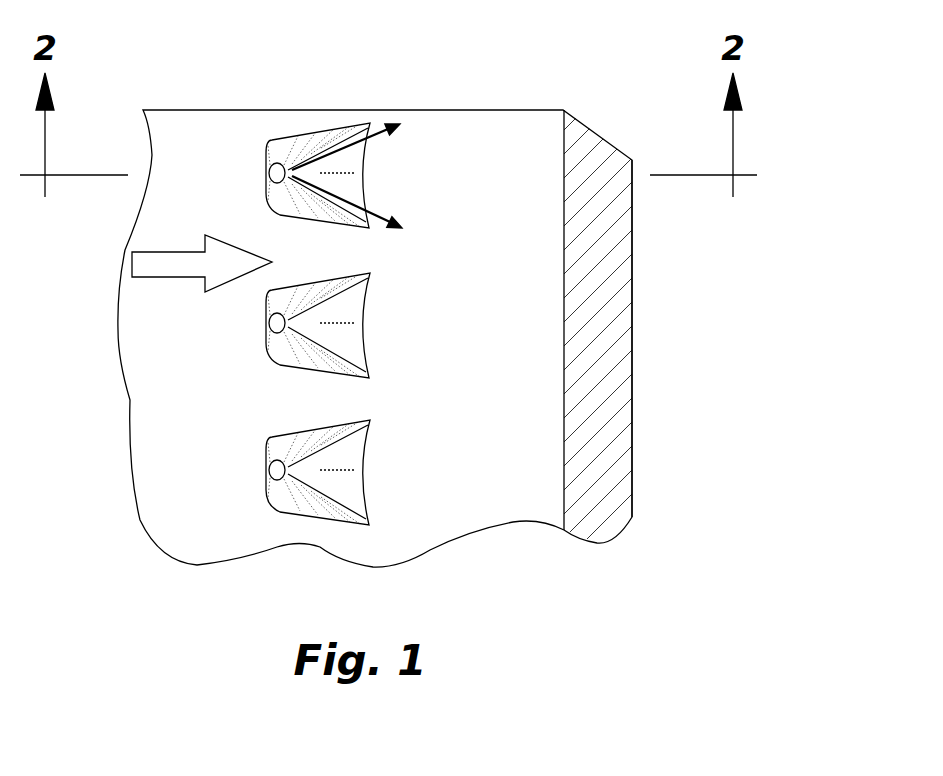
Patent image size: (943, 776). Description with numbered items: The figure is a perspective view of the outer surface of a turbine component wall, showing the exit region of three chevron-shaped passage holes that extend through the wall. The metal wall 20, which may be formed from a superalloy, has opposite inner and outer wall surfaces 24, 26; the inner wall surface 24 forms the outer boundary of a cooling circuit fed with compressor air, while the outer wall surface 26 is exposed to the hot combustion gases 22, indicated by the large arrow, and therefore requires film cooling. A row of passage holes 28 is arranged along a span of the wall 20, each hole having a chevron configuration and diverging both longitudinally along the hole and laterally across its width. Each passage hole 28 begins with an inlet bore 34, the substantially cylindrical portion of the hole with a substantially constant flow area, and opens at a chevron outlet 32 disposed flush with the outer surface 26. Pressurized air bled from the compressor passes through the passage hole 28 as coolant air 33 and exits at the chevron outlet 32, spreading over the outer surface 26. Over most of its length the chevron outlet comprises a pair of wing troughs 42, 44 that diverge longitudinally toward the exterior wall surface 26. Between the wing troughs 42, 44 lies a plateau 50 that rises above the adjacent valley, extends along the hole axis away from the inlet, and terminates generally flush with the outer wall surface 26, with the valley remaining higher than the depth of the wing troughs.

The metal wall 20 is at (508, 110).
The hot combustion gases 22 is at (147, 277).
The inner wall surface 24 is at (633, 337).
The outer wall surface 26 is at (456, 341).
The passage hole 28 is at (262, 145).
The chevron outlet 32 is at (333, 220).
The coolant air 33 is at (357, 157).
The inlet bore 34 is at (267, 335).
The wing trough 42 is at (323, 128).
The wing trough 44 is at (302, 215).
The plateau 50 is at (358, 167).